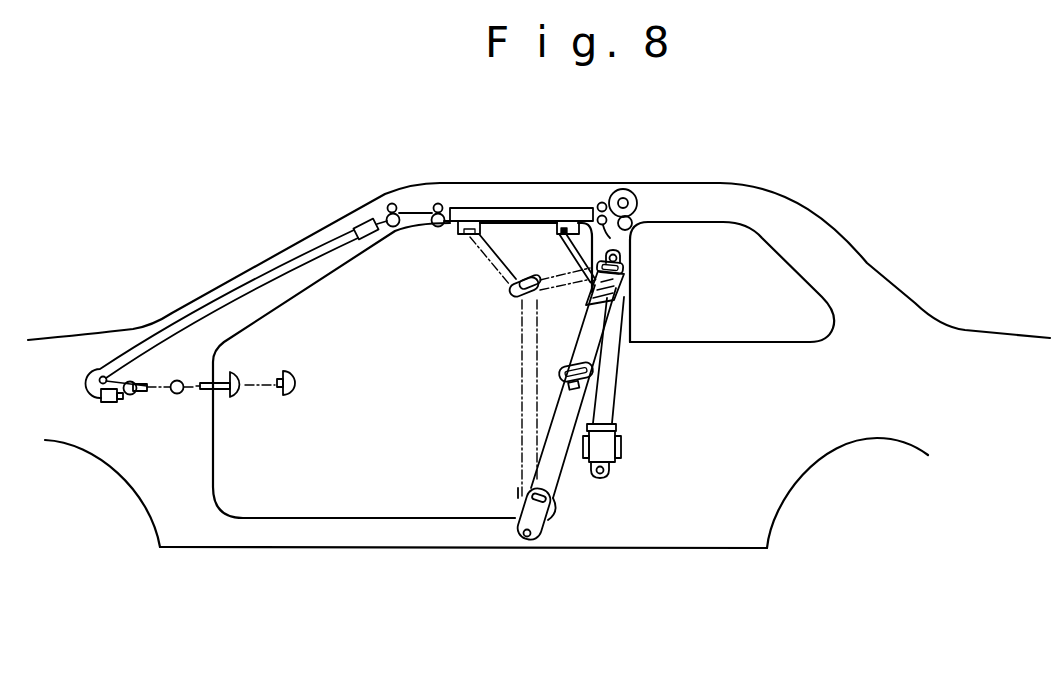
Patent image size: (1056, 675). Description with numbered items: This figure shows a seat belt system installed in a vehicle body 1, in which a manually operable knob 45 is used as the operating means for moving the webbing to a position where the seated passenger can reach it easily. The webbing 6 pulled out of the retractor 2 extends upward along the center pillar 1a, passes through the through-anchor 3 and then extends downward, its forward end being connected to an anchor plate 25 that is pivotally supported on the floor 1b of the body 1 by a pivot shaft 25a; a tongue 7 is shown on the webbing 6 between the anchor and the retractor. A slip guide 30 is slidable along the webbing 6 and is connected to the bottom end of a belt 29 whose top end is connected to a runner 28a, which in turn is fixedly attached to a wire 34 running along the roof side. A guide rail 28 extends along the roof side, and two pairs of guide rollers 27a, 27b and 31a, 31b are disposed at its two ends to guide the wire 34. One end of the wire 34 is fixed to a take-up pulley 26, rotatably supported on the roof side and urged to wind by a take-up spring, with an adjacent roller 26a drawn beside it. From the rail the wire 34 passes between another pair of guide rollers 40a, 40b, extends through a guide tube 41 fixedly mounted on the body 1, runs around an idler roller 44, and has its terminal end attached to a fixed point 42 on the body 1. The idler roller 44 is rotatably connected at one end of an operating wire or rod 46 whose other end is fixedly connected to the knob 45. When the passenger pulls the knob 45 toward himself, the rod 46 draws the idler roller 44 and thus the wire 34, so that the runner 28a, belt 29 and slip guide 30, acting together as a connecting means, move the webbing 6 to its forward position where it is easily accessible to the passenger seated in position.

The body 1 is at (268, 252).
The center pillar 1a is at (632, 304).
The floor 1b is at (358, 550).
The retractor 2 is at (610, 447).
The through-anchor 3 is at (627, 272).
The webbing 6 is at (598, 329).
The tongue 7 is at (578, 386).
The anchor plate 25 is at (541, 512).
The pivot shaft 25a is at (530, 543).
The take-up pulley 26 is at (628, 190).
The guide roller 26a is at (637, 232).
The guide roller 27a is at (602, 202).
The guide roller 27b is at (610, 238).
The guide rail 28 is at (506, 208).
The runner 28a is at (567, 220).
The belt 29 is at (574, 254).
The slip guide 30 is at (588, 303).
The guide roller 31a is at (440, 203).
The guide roller 31b is at (438, 228).
The wire 34 is at (416, 212).
The guide roller 40a is at (390, 203).
The guide roller 40b is at (395, 228).
The guide tube 41 is at (307, 262).
The fixed point 42 is at (107, 378).
The idler roller 44 is at (132, 402).
The knob 45 is at (238, 397).
The operating wire or rod 46 is at (174, 393).